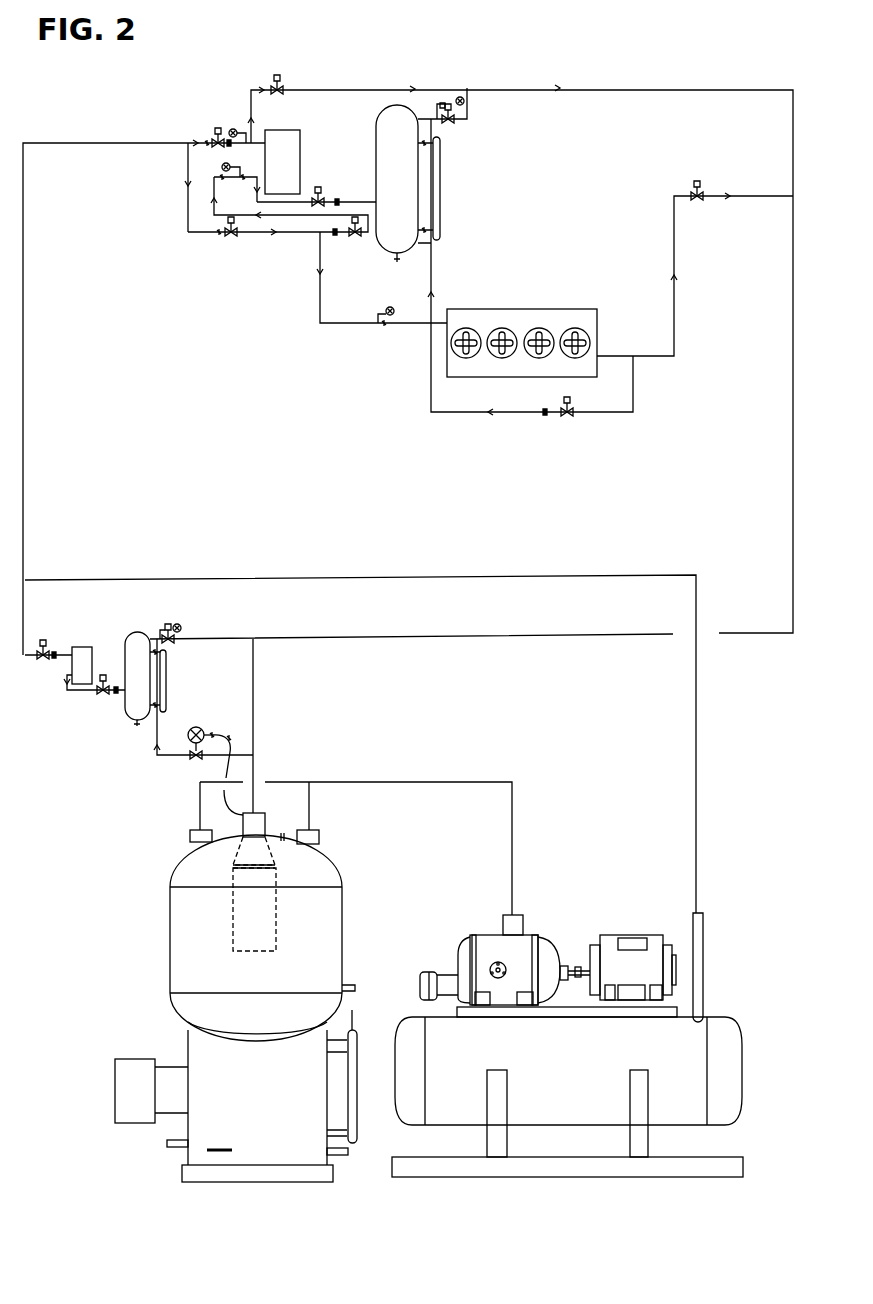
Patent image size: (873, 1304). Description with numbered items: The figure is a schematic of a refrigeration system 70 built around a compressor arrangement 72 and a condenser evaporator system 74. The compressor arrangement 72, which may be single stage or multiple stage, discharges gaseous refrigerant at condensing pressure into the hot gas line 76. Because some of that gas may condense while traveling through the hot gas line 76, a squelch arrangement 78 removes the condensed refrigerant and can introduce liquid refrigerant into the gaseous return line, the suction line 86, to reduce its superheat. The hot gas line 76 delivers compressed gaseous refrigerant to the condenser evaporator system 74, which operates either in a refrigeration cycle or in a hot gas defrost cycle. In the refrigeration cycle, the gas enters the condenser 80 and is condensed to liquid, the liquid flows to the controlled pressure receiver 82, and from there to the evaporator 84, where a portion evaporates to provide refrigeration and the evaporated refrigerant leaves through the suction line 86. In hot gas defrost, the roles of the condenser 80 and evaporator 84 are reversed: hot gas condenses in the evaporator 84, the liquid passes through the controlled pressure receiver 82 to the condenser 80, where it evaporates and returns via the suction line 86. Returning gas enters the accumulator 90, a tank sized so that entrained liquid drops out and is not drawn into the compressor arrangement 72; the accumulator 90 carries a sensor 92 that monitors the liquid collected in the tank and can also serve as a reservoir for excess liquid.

The refrigeration system 70 is at (183, 126).
The compressor arrangement 72 is at (735, 962).
The condenser evaporator system 74 is at (812, 130).
The hot gas line 76 is at (26, 422).
The squelch arrangement 78 is at (83, 723).
The condenser 80 is at (301, 145).
The controlled pressure receiver 82 is at (415, 110).
The evaporator 84 is at (522, 305).
The suction line 86 is at (792, 309).
The accumulator 90 is at (337, 867).
The sensor 92 is at (357, 1133).